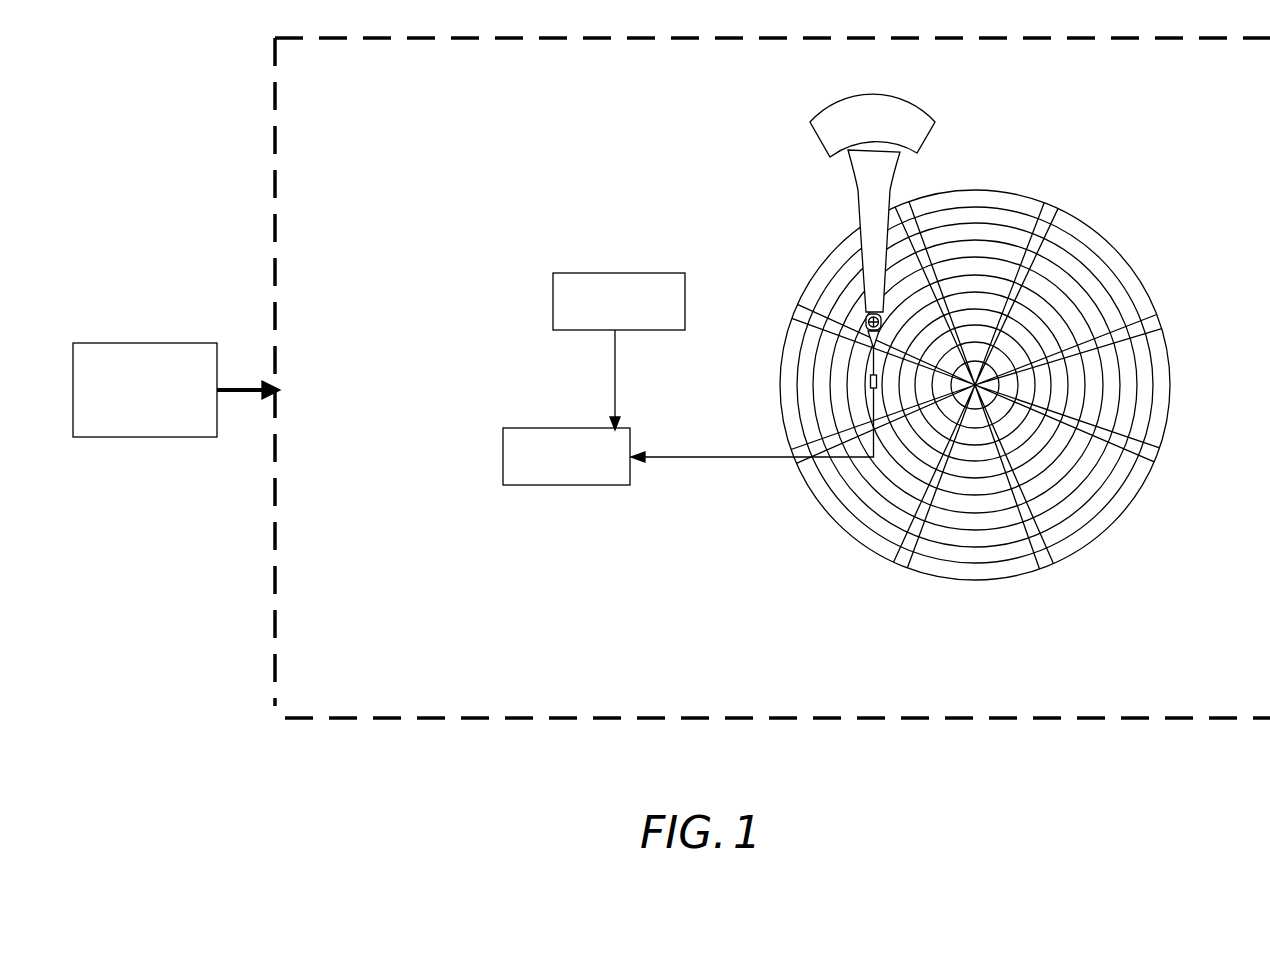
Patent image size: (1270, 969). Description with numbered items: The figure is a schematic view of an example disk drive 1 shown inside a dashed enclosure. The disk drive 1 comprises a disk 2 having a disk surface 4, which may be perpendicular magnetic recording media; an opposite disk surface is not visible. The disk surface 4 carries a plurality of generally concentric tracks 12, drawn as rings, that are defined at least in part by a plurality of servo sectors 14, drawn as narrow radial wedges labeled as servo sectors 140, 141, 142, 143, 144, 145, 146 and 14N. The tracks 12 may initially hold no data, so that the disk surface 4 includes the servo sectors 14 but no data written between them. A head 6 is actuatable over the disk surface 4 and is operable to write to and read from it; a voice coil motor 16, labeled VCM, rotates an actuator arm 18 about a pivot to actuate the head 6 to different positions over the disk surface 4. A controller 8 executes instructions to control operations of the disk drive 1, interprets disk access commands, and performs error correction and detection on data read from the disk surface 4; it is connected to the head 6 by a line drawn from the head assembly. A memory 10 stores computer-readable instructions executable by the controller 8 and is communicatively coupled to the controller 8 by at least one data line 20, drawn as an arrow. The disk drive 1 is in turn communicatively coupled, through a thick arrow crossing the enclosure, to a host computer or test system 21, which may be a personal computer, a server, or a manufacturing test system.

The disk drive 1 is at (484, 720).
The disk 2 is at (1008, 358).
The disk surface 4 is at (994, 203).
The head 6 is at (864, 391).
The controller 8 is at (560, 487).
The memory 10 is at (585, 333).
The tracks 12 is at (1142, 410).
The servo sectors 14 is at (980, 394).
The servo sector 140 is at (1053, 212).
The servo sector 141 is at (1175, 303).
The servo sector 142 is at (1162, 462).
The servo sector 143 is at (1045, 568).
The servo sector 144 is at (896, 566).
The servo sector 145 is at (796, 463).
The servo sector 146 is at (797, 304).
The servo sector 14N is at (910, 210).
The voice coil motor 16 is at (830, 158).
The actuator arm 18 is at (857, 190).
The data line 20 is at (616, 385).
The host computer or test system 21 is at (149, 320).